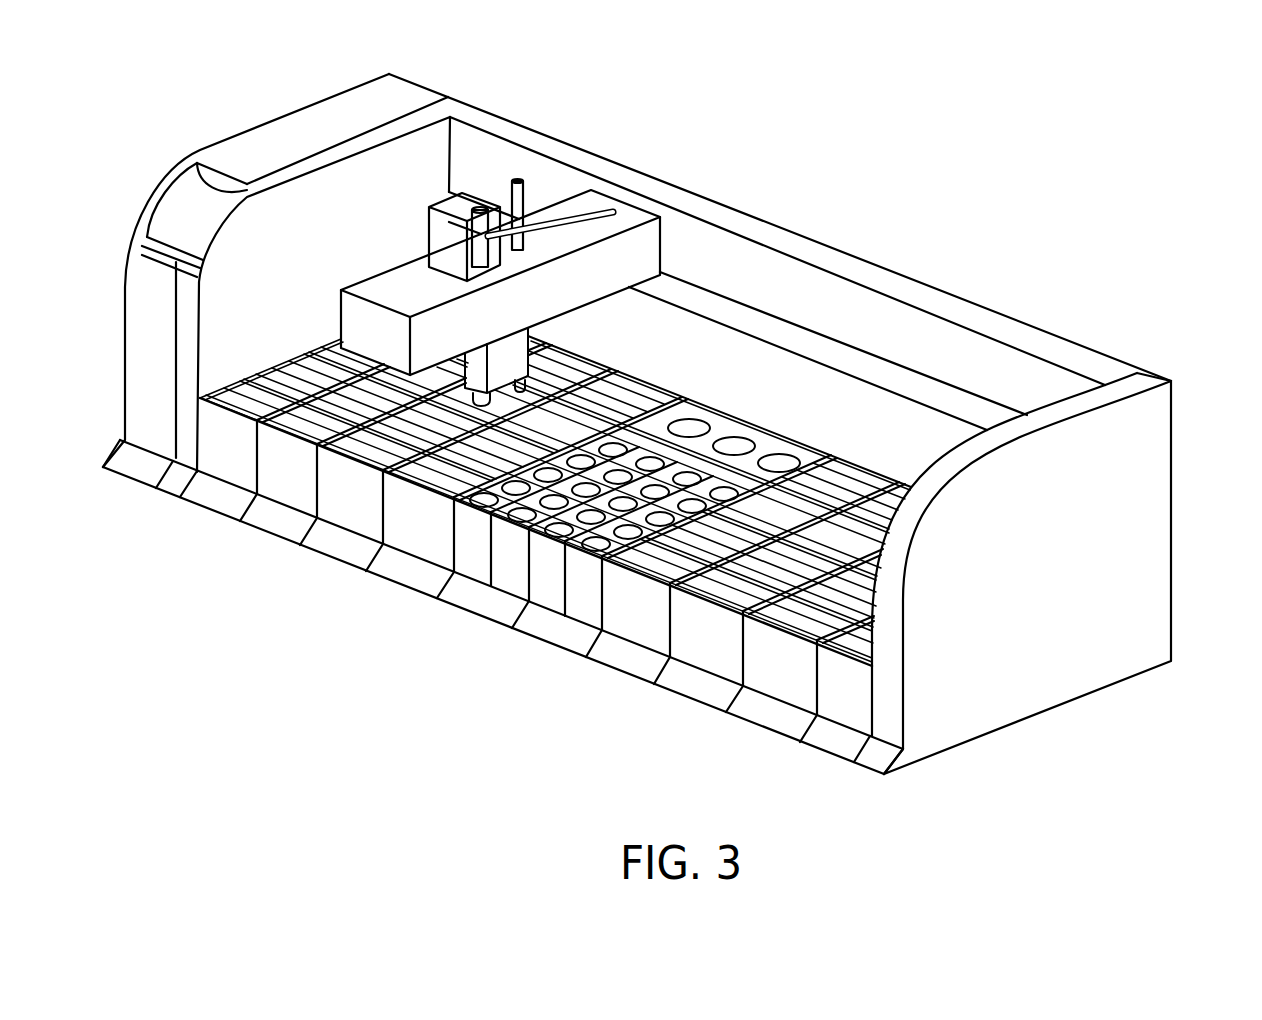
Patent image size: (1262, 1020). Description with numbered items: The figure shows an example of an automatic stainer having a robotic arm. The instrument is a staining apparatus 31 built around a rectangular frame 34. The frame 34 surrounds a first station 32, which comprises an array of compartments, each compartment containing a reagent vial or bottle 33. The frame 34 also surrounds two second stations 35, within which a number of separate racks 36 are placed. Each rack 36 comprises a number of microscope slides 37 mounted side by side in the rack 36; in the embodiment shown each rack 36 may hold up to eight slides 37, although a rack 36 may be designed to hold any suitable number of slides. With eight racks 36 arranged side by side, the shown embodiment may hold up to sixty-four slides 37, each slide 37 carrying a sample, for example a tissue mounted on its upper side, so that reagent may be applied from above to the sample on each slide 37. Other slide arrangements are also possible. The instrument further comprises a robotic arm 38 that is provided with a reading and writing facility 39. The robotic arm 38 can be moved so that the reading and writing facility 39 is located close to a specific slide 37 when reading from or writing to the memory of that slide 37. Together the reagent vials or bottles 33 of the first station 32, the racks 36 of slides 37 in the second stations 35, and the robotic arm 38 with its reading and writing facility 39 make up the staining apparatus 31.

The staining apparatus 31 is at (358, 31).
The first station 32 is at (483, 642).
The reagent vial or bottle 33 is at (650, 458).
The rectangular frame 34 is at (1073, 530).
The second station 35 is at (235, 542).
The rack 36 is at (410, 527).
The microscope slide 37 is at (337, 362).
The robotic arm 38 is at (623, 253).
The reading and writing facility 39 is at (540, 408).